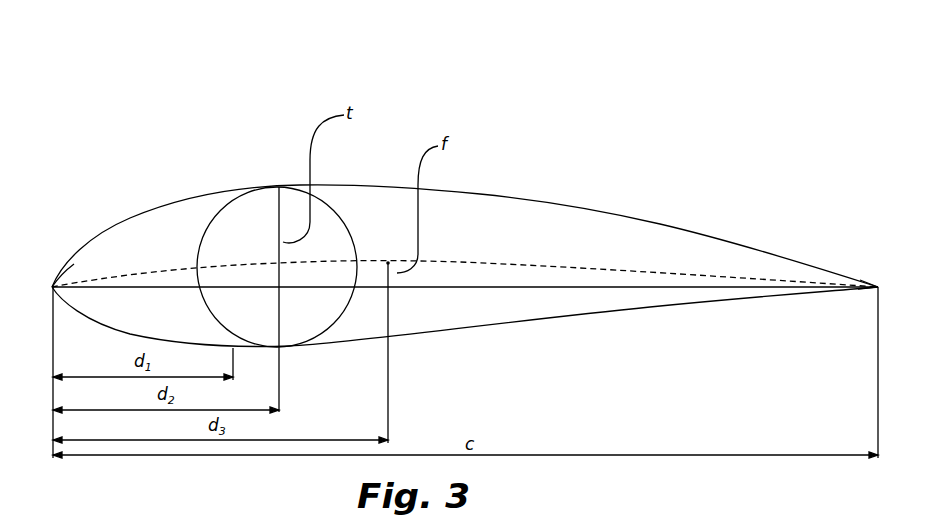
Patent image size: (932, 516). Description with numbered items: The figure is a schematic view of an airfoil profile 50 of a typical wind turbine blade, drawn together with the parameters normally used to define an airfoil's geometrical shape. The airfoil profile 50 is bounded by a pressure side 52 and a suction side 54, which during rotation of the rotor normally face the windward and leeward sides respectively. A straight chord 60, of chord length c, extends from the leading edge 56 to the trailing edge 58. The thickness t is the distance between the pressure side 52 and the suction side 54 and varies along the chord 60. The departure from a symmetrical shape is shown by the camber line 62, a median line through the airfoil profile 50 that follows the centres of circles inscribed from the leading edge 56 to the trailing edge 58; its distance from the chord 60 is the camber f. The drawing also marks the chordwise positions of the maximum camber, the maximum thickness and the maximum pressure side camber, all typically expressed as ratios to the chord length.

The airfoil profile 50 is at (449, 212).
The pressure side 52 is at (628, 312).
The suction side 54 is at (567, 203).
The leading edge 56 is at (52, 287).
The trailing edge 58 is at (878, 287).
The chord 60 is at (668, 287).
The camber line 62 is at (453, 260).